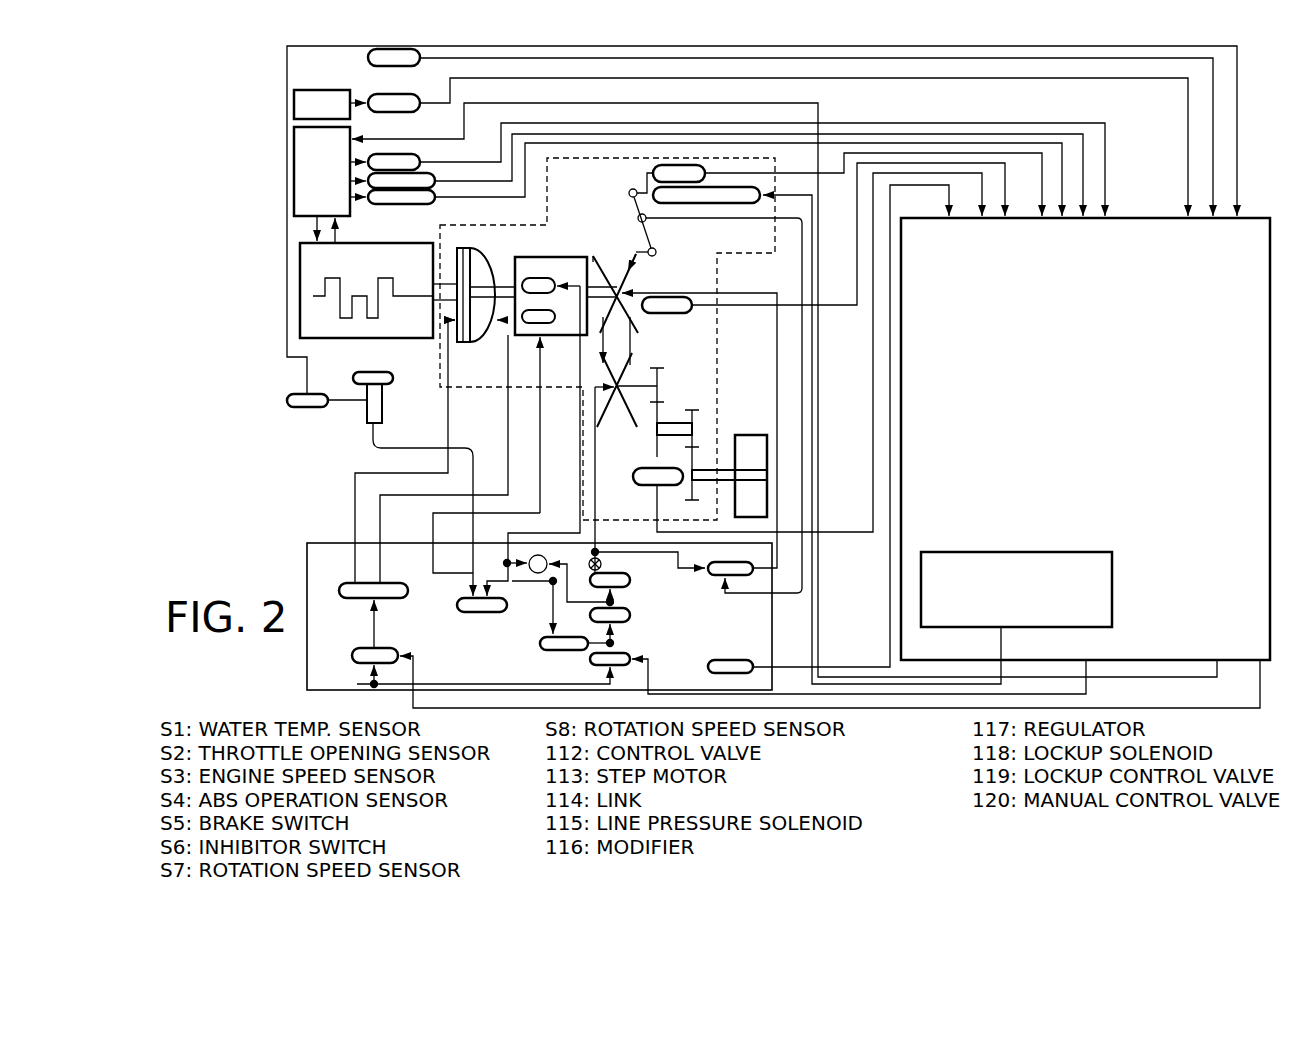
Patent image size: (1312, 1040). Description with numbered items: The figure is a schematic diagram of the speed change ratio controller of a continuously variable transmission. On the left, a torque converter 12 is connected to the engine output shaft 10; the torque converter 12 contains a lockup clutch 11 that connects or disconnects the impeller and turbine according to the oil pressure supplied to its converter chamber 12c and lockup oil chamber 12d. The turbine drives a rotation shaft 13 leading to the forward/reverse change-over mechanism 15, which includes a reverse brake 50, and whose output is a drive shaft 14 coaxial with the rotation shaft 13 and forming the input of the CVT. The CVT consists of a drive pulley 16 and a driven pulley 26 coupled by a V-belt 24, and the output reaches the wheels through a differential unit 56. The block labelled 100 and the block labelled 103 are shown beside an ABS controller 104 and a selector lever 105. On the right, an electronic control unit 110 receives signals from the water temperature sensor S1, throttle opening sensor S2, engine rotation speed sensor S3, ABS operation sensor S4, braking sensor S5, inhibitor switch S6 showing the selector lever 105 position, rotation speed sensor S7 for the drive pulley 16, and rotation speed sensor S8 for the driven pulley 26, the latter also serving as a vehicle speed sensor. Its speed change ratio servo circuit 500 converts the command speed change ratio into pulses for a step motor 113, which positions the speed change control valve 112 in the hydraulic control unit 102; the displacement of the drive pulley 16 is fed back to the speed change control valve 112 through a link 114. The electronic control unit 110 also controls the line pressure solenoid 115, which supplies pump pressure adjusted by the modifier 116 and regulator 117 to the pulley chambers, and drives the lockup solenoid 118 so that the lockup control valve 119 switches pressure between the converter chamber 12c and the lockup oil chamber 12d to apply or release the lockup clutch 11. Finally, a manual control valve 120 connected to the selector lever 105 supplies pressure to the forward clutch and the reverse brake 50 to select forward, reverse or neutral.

The engine output shaft 10 is at (455, 283).
The lockup clutch 11 is at (463, 265).
The torque converter 12 is at (490, 257).
The converter chamber 12c is at (528, 258).
The lockup oil chamber 12d is at (457, 280).
The rotation shaft 13 is at (508, 335).
The drive shaft 14 is at (597, 262).
The forward/reverse change-over mechanism 15 is at (590, 255).
The drive pulley 16 is at (633, 274).
The V-belt 24 is at (626, 345).
The driven pulley 26 is at (620, 419).
The reverse brake 50 is at (540, 326).
The differential unit 56 is at (688, 482).
The engine 100 is at (403, 340).
The hydraulic control unit 102 is at (311, 543).
The engine control unit 103 is at (294, 172).
The ABS controller 104 is at (294, 100).
The selector lever 105 is at (382, 402).
The electronic control unit 110 is at (1253, 218).
The speed change control valve 112 is at (715, 578).
The step motor 113 is at (736, 204).
The link 114 is at (652, 240).
The line pressure solenoid 115 is at (545, 643).
The modifier 116 is at (632, 615).
The regulator 117 is at (632, 580).
The lockup solenoid 118 is at (385, 650).
The lockup control valve 119 is at (400, 573).
The manual control valve 120 is at (482, 614).
The speed change ratio servo circuit 500 is at (1100, 552).
The water temperature sensor S1 is at (437, 196).
The throttle opening sensor S2 is at (437, 183).
The engine rotation speed sensor S3 is at (422, 157).
The ABS operation sensor S4 is at (398, 95).
The braking sensor S5 is at (368, 57).
The inhibitor switch S6 is at (290, 393).
The rotation speed sensor S7 is at (672, 314).
The rotation speed sensor S8 is at (650, 486).